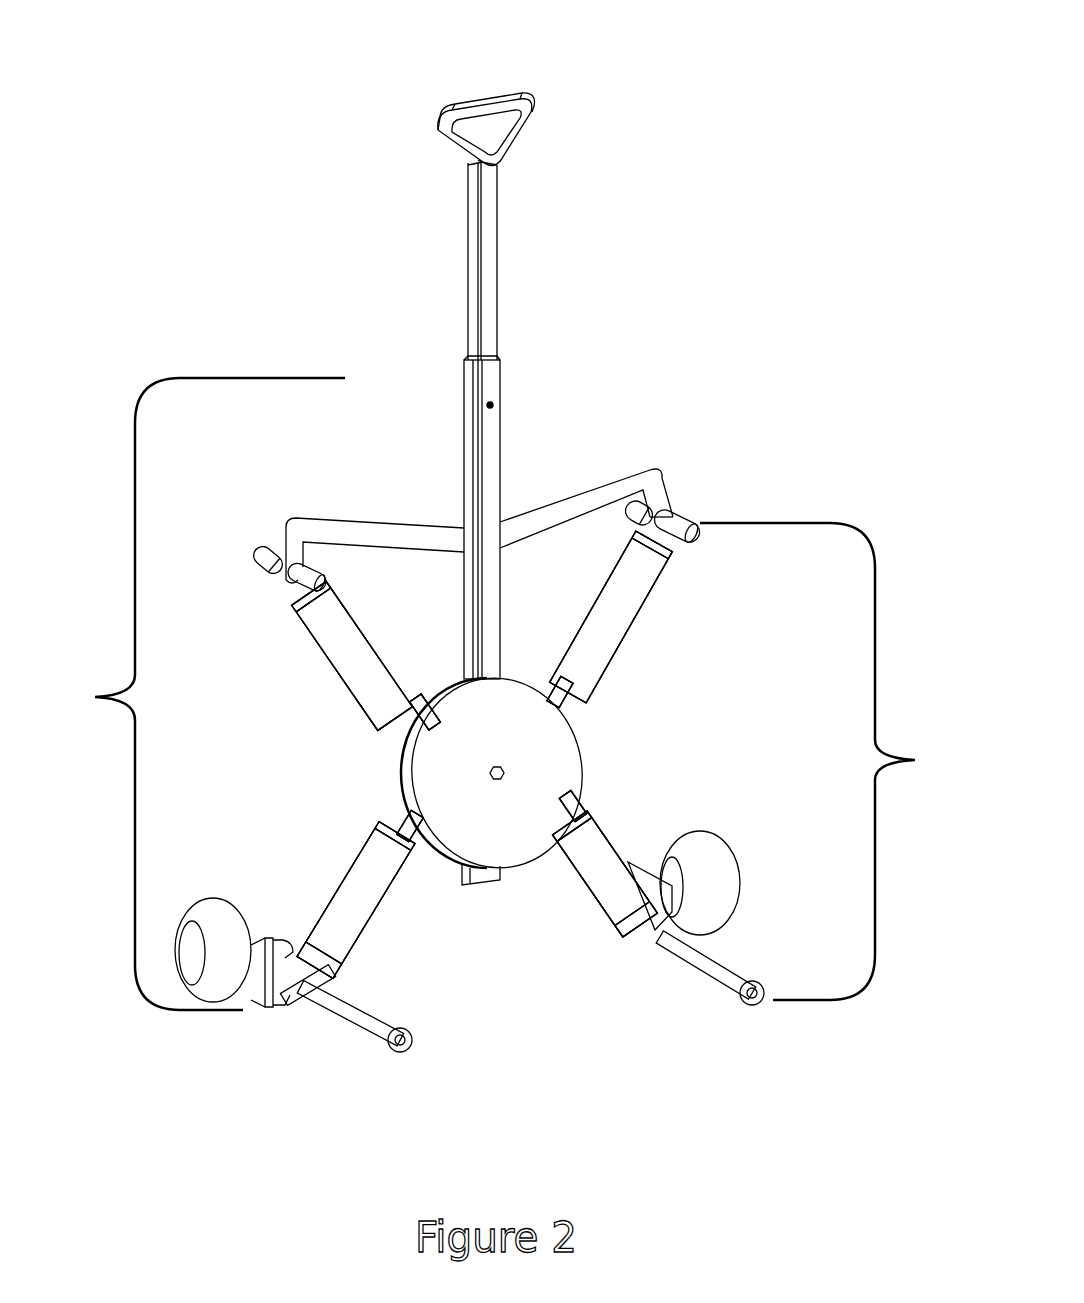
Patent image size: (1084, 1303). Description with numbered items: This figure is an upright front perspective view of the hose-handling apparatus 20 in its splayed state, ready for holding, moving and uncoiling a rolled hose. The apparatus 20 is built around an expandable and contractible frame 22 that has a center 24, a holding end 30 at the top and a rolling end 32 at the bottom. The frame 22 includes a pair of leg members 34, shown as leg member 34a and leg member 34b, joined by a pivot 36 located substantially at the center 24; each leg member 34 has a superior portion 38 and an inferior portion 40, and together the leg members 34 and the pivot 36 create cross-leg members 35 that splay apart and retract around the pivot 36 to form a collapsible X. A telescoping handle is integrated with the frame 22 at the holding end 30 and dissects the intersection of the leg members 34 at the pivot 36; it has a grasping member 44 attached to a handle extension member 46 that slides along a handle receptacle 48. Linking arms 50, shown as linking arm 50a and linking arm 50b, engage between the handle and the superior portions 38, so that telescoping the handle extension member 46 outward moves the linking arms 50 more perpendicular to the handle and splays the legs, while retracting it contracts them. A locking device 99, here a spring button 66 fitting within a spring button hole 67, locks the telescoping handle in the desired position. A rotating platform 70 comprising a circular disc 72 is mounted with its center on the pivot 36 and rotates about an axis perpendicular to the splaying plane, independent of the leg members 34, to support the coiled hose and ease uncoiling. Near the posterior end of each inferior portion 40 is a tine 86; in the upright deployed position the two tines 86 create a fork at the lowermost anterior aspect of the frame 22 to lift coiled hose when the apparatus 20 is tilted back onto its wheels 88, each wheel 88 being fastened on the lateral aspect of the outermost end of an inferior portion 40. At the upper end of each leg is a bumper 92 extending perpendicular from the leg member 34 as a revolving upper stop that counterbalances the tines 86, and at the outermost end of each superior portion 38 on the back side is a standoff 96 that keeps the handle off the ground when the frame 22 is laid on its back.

The apparatus 20 is at (637, 325).
The frame 22 is at (241, 694).
The center 24 is at (545, 872).
The holding end 30 is at (463, 88).
The rolling end 32 is at (653, 975).
The leg members 34 is at (600, 853).
The leg member 34a is at (388, 706).
The leg member 34b is at (617, 627).
The cross-leg members 35 is at (753, 761).
The pivot 36 is at (503, 778).
The superior portion 38 is at (482, 631).
The inferior portion 40 is at (387, 847).
The grasping member 44 is at (522, 143).
The handle extension member 46 is at (487, 248).
The handle receptacle 48 is at (492, 383).
The linking arms 50 is at (531, 445).
The linking arm 50a is at (437, 545).
The linking arm 50b is at (643, 470).
The spring button 66 is at (568, 425).
The spring button hole 67 is at (568, 425).
The locking device 99 is at (492, 405).
The rotating platform 70 is at (600, 776).
The circular disc 72 is at (555, 773).
The tine 86 is at (345, 1007).
The wheel 88 is at (233, 928).
The bumper 92 is at (305, 573).
The standoff 96 is at (279, 542).